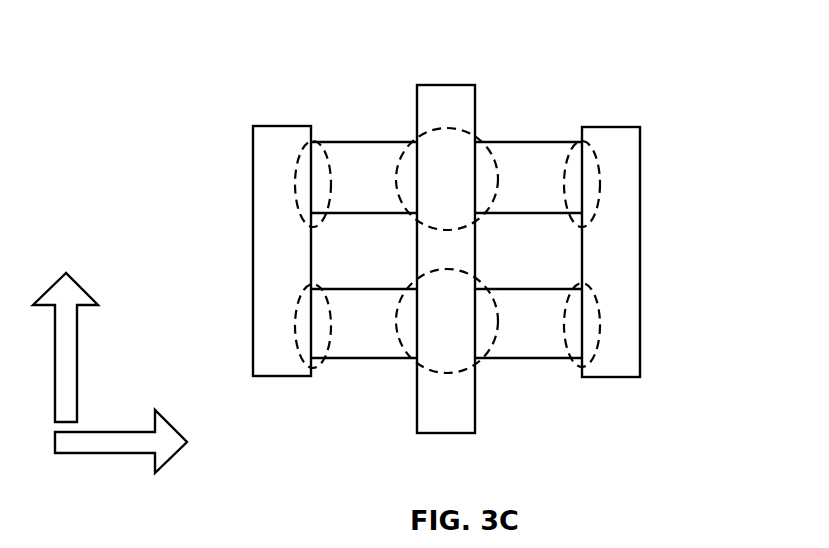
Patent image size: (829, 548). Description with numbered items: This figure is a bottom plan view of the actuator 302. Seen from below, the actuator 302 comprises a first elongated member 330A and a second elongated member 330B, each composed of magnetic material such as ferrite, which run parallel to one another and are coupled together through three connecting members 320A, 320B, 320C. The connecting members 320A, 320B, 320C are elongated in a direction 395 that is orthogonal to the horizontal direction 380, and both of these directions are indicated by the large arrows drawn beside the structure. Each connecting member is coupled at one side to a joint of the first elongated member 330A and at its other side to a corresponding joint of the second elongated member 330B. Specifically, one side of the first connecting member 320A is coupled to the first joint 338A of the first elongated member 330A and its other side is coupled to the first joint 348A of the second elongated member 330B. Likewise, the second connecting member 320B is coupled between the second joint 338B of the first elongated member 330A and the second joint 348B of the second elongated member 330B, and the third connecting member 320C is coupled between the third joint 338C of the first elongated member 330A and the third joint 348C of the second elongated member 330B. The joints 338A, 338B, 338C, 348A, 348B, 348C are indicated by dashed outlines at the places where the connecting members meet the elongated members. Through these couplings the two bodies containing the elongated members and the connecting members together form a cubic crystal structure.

The actuator 302 is at (145, 137).
The first connecting member 320A is at (640, 222).
The second connecting member 320B is at (438, 85).
The third connecting member 320C is at (253, 232).
The first elongated member 330A is at (510, 142).
The second elongated member 330B is at (517, 363).
The first joint of the first elongated member 338A is at (580, 142).
The second joint of the first elongated member 338B is at (397, 165).
The third joint of the first elongated member 338C is at (322, 142).
The first joint of the second elongated member 348A is at (575, 368).
The second joint of the second elongated member 348B is at (396, 336).
The third joint of the second elongated member 348C is at (327, 363).
The direction 395 is at (83, 347).
The horizontal direction 380 is at (121, 450).